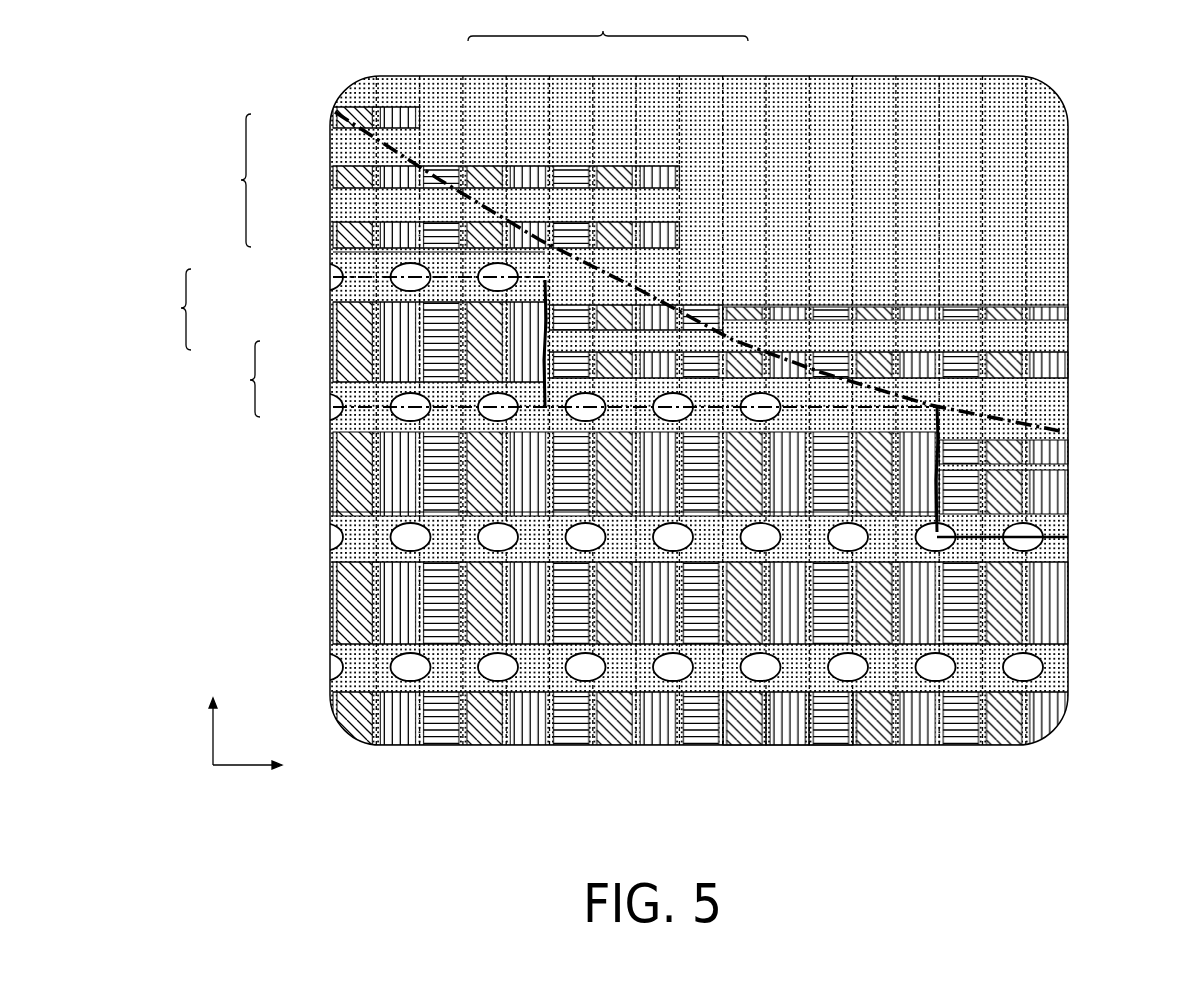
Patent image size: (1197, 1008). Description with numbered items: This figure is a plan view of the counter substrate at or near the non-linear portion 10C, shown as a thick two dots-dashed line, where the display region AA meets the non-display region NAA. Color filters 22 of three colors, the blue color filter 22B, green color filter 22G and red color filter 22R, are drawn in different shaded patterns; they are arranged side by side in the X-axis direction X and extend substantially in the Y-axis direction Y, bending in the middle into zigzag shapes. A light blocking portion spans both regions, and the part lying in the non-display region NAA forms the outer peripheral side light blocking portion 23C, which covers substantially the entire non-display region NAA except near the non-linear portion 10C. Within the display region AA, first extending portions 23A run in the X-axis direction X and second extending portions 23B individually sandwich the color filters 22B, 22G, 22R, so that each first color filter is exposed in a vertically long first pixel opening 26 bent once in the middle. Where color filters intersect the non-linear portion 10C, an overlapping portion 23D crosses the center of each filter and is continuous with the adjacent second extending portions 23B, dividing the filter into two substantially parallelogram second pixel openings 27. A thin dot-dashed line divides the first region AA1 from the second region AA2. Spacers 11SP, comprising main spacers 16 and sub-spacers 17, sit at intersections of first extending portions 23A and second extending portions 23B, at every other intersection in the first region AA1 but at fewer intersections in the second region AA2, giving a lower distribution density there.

The non-display region NAA is at (1000, 115).
The outer peripheral side light blocking portion 23C is at (918, 103).
The non-linear portion 10C is at (963, 403).
The color filters 22 is at (800, 786).
The blue color filter 22B is at (712, 640).
The green color filter 22G is at (748, 695).
The red color filter 22R is at (778, 695).
The first extending portions 23A is at (433, 187).
The second extending portions 23B is at (417, 192).
The overlapping portion 23D is at (440, 210).
The display region AA is at (173, 309).
The first region AA1 is at (358, 323).
The second region AA2 is at (357, 243).
The spacer 11SP is at (228, 379).
The main spacer 16 is at (412, 407).
The sub-spacer 17 is at (492, 292).
The first pixel opening 26 is at (633, 635).
The second pixel openings 27 is at (940, 372).
The X-axis direction X is at (256, 764).
The Y-axis direction Y is at (215, 716).